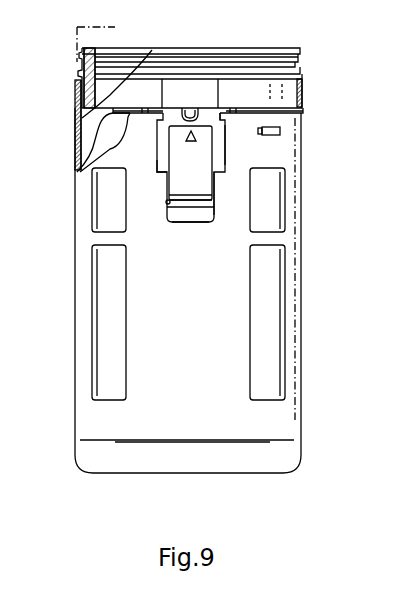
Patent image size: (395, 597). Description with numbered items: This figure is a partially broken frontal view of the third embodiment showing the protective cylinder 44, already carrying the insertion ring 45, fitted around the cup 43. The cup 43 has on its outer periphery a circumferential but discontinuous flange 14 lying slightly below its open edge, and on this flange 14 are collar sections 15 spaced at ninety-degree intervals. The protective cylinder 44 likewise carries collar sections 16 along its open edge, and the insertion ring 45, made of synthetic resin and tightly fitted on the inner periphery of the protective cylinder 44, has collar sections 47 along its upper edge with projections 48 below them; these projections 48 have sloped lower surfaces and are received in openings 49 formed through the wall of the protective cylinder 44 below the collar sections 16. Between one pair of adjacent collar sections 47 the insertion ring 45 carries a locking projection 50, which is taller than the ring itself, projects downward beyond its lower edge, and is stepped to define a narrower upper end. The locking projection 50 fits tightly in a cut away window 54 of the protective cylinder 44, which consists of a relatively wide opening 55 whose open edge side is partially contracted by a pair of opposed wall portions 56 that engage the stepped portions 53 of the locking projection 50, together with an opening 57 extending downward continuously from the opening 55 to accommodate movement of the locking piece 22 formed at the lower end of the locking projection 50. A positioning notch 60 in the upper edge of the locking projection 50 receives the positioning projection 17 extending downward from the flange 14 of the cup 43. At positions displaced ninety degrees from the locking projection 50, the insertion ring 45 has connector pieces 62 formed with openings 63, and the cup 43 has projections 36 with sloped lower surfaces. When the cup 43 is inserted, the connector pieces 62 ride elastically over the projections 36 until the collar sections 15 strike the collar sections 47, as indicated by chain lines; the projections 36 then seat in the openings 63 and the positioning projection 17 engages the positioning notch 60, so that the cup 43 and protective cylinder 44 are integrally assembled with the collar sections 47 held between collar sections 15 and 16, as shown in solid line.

The flange 14 is at (182, 46).
The collar sections 15 is at (256, 46).
The collar sections 16 is at (302, 113).
The positioning projection 17 is at (190, 110).
The locking piece 22 is at (190, 188).
The projection 36 is at (304, 97).
The cup 43 is at (287, 46).
The protective cylinder 44 is at (303, 235).
The insertion ring 45 is at (82, 132).
The collar sections 47 is at (303, 109).
The projections 48 is at (281, 131).
The openings 49 is at (266, 136).
The locking projection 50 is at (158, 134).
The stepped portions 53 is at (224, 128).
The cut away window 54 is at (217, 180).
The opening 55 is at (156, 173).
The wall portions 56 is at (221, 122).
The opening 57 is at (166, 203).
The positioning notch 60 is at (160, 157).
The connector pieces 62 is at (304, 80).
The openings 63 is at (77, 97).